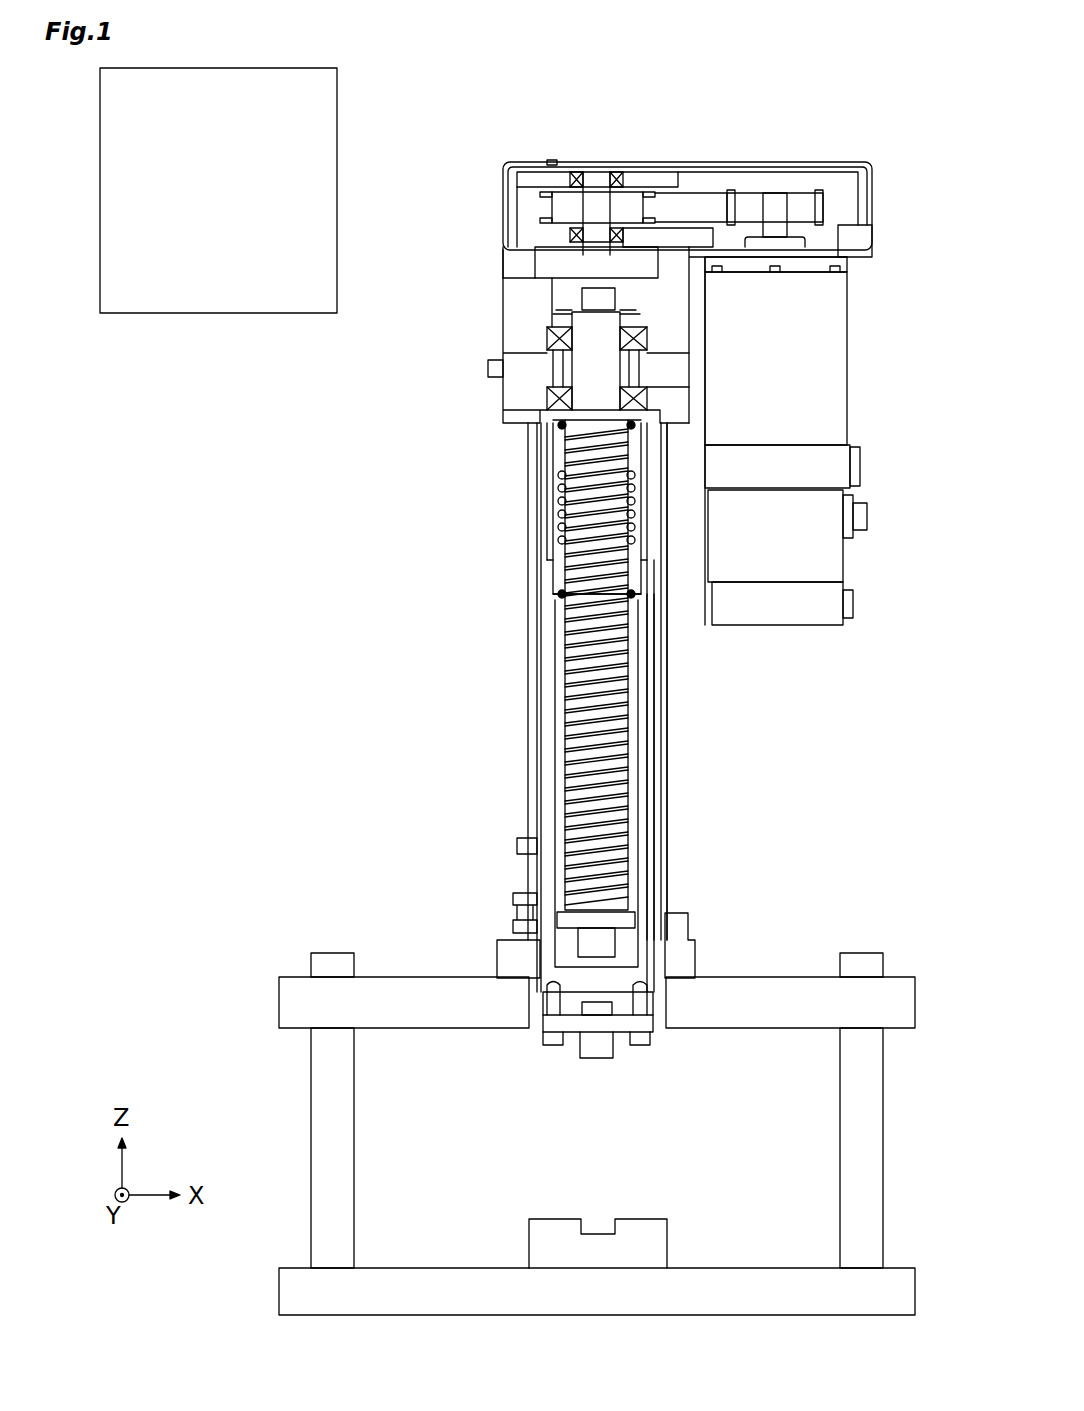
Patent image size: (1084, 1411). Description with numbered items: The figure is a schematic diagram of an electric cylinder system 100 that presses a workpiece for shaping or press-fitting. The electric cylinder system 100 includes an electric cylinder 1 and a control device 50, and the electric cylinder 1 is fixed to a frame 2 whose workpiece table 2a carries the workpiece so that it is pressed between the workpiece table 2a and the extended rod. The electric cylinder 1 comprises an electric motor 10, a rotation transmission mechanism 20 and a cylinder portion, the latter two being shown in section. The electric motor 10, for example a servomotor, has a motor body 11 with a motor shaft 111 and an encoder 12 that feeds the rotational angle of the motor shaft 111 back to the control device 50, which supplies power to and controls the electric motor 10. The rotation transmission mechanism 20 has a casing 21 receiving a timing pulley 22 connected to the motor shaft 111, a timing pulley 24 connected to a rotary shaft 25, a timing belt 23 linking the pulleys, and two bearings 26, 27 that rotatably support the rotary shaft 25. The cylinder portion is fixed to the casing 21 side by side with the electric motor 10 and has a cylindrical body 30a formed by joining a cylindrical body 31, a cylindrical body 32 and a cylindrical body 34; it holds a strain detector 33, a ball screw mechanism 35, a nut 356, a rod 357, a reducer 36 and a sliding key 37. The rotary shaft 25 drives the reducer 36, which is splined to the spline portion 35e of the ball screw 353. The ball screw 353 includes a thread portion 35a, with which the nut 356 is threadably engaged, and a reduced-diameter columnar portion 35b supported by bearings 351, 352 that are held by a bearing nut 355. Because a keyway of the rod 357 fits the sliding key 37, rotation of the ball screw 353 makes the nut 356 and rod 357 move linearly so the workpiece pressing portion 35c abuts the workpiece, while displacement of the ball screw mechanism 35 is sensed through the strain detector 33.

The electric cylinder system 100 is at (927, 89).
The electric cylinder 1 is at (906, 180).
The frame 2 is at (279, 1290).
The workpiece table 2a is at (529, 1235).
The electric motor 10 is at (801, 463).
The motor body 11 is at (840, 352).
The encoder 12 is at (790, 620).
The rotation transmission mechanism 20 is at (775, 163).
The casing 21 is at (858, 248).
The timing pulley 22 is at (808, 203).
The timing belt 23 is at (698, 208).
The timing pulley 24 is at (628, 200).
The rotary shaft 25 is at (592, 185).
The bearing 26 is at (595, 202).
The bearing 27 is at (582, 232).
The cylindrical body 30a is at (519, 593).
The cylindrical body 31 is at (517, 397).
The cylindrical body 32 is at (553, 263).
The strain detector 33 is at (510, 387).
The cylindrical body 34 is at (532, 756).
The ball screw mechanism 35 is at (671, 684).
The thread portion 35a is at (565, 660).
The columnar portion 35b is at (610, 388).
The workpiece pressing portion 35c is at (598, 1060).
The spline portion 35e is at (513, 278).
The reducer 36 is at (527, 257).
The sliding key 37 is at (519, 905).
The control device 50 is at (153, 315).
The motor shaft 111 is at (775, 237).
The bearing 351 is at (527, 413).
The bearing 352 is at (548, 322).
The ball screw 353 is at (565, 716).
The bearing nut 355 is at (553, 318).
The nut 356 is at (560, 546).
The rod 357 is at (649, 672).